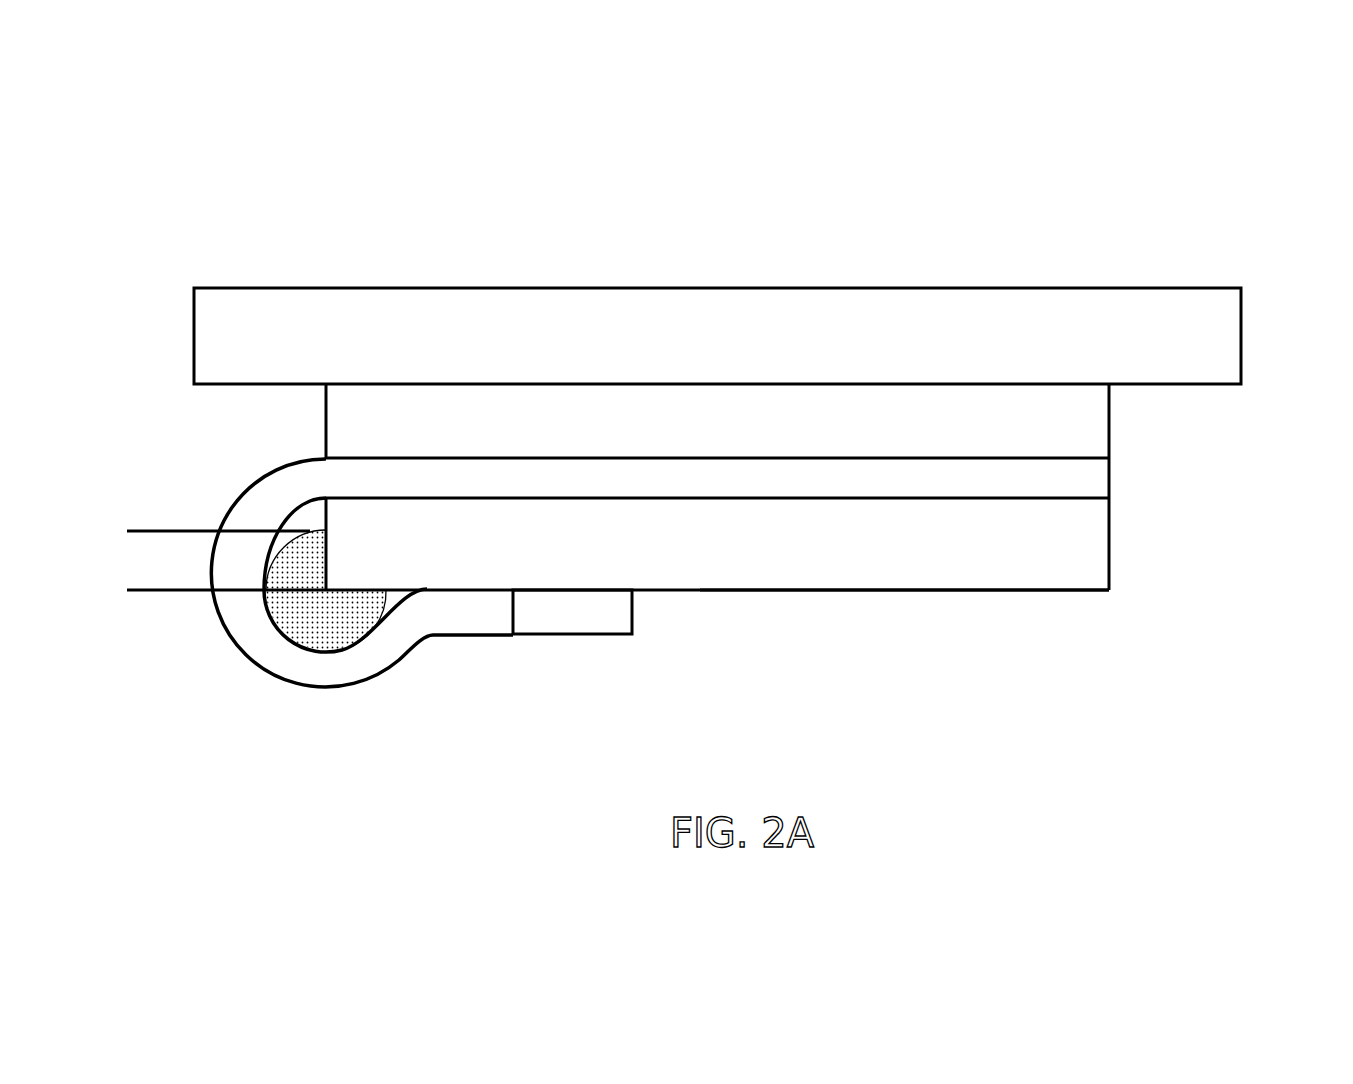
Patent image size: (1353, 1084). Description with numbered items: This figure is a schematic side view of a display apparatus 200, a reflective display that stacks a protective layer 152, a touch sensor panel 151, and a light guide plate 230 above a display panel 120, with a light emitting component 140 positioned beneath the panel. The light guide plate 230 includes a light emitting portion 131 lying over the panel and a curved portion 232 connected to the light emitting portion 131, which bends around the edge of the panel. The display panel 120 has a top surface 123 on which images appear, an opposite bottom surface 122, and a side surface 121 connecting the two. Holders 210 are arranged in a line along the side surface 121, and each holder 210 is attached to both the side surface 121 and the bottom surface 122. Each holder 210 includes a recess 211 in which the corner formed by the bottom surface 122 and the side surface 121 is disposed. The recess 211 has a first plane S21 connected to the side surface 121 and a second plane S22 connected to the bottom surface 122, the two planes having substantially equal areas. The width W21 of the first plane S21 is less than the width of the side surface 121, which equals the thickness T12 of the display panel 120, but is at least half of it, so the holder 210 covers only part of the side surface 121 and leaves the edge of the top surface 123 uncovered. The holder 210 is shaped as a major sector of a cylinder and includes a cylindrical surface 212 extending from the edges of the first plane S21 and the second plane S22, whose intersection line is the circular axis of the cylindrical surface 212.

The display apparatus 200 is at (143, 178).
The protective layer 152 is at (1219, 334).
The touch sensor panel 151 is at (1085, 423).
The light emitting portion 131 is at (473, 477).
The top surface 123 is at (980, 485).
The display panel 120 is at (1085, 545).
The bottom surface 122 is at (986, 605).
The light emitting component 140 is at (617, 608).
The side surface 121 is at (278, 620).
The holder 210 is at (318, 636).
The light guide plate 230 is at (257, 200).
The curved portion 232 is at (273, 490).
The recess 211 is at (374, 525).
The cylindrical surface 212 is at (252, 607).
The first plane S21 is at (342, 541).
The second plane S22 is at (363, 578).
The width of the first plane W21 is at (132, 531).
The thickness of the display panel T12 is at (535, 498).